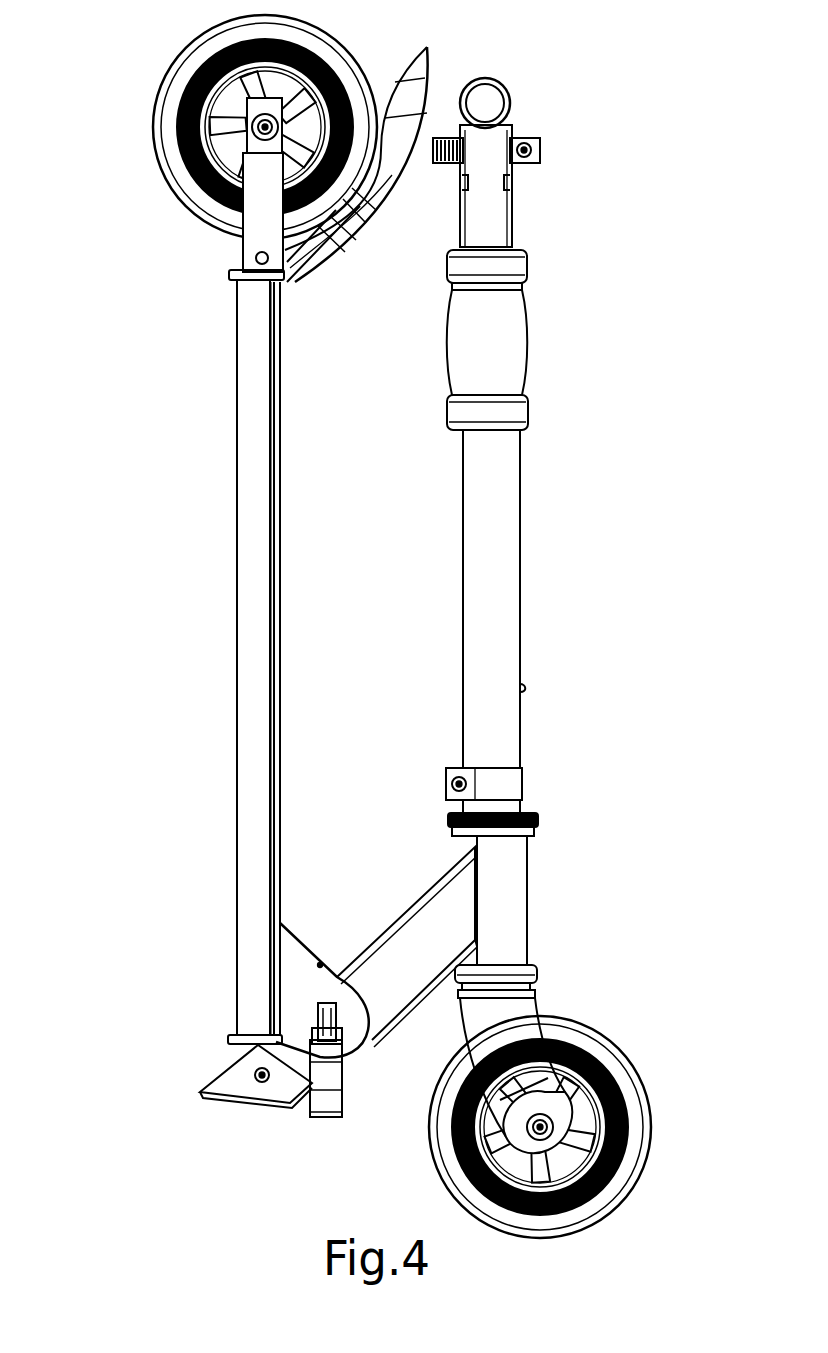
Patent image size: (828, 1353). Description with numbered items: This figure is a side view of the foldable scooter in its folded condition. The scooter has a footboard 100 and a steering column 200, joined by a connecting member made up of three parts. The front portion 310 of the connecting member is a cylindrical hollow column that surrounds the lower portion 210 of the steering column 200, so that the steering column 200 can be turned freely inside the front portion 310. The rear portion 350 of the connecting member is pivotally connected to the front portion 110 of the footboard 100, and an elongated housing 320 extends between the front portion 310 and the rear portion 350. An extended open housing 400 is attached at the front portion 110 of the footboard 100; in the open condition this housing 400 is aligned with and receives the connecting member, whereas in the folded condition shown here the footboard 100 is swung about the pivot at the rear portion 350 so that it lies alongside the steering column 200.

The footboard 100 is at (273, 457).
The front portion of the footboard 110 is at (270, 955).
The steering column 200 is at (497, 530).
The lower portion of the steering column 210 is at (522, 808).
The front portion of the connecting member 310 is at (500, 905).
The elongated housing 320 is at (420, 970).
The rear portion of the connecting member 350 is at (270, 1092).
The extended open housing 400 is at (303, 968).